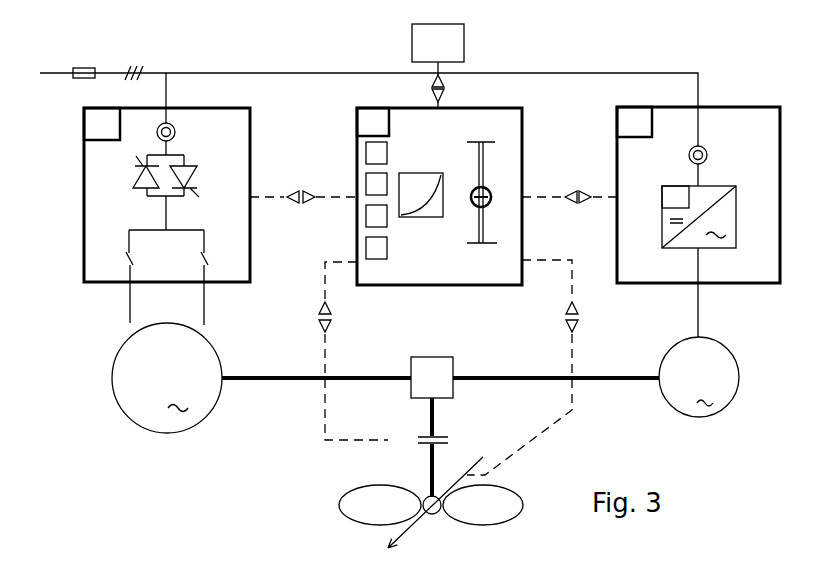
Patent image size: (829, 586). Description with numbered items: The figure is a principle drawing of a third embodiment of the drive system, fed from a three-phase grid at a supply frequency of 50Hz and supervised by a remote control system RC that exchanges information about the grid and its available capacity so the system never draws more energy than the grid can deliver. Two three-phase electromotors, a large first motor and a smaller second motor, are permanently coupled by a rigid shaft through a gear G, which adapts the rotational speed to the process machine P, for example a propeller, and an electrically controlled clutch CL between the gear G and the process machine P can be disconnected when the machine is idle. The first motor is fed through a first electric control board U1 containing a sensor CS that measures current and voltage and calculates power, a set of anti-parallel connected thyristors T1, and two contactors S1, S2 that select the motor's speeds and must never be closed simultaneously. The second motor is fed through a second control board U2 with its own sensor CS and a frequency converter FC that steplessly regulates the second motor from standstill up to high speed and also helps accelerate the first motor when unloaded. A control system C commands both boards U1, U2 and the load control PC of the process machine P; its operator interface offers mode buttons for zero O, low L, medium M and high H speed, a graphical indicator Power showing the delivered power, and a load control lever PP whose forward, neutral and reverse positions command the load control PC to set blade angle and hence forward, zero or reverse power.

The power supply 50Hz is at (365, 81).
The remote control system RC is at (438, 66).
The first electric control board U1 is at (167, 195).
The sensor CS is at (176, 132).
The thyristors T1 is at (166, 185).
The first contactor S1 is at (122, 276).
The second contactor S2 is at (197, 277).
The control system C is at (439, 196).
The high rotational speed H is at (376, 153).
The medium rotational speed M is at (376, 184).
The low rotational speed L is at (376, 216).
The zero mode O is at (376, 248).
The graphical indicator Power is at (420, 185).
The load control lever PP is at (485, 194).
The second control board U2 is at (698, 195).
The frequency converter FC is at (699, 250).
The gear G is at (440, 377).
The clutch CL is at (421, 447).
The process machine P is at (431, 517).
The load control PC is at (443, 494).